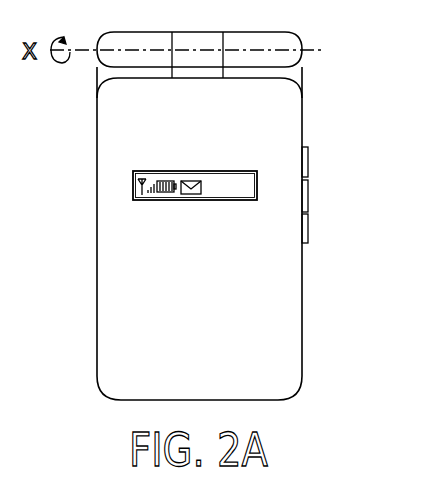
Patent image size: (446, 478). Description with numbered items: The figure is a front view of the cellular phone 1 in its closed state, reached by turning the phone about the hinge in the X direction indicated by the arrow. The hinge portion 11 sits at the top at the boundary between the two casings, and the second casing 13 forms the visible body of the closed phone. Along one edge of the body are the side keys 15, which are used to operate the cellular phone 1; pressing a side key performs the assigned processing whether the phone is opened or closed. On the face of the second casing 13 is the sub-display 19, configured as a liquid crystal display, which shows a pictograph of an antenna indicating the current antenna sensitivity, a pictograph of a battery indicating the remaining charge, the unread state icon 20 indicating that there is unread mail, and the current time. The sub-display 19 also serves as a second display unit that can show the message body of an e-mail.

The cellular phone 1 is at (320, 318).
The hinge portion 11 is at (302, 40).
The second casing 13 is at (97, 239).
The side keys 15 is at (318, 142).
The sub-display 19 is at (208, 137).
The unread state icon 20 is at (189, 179).